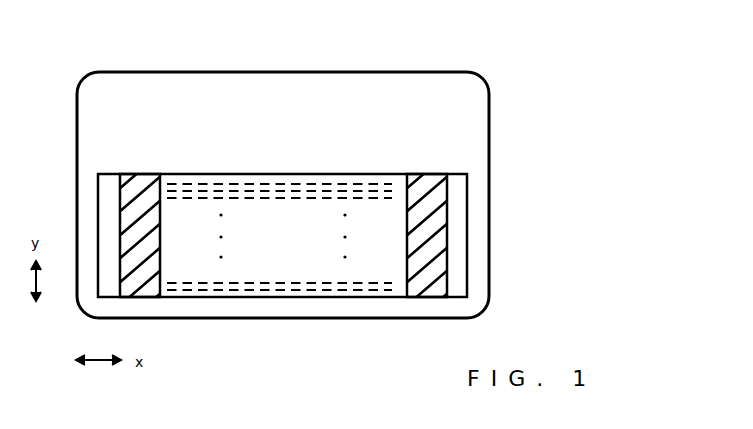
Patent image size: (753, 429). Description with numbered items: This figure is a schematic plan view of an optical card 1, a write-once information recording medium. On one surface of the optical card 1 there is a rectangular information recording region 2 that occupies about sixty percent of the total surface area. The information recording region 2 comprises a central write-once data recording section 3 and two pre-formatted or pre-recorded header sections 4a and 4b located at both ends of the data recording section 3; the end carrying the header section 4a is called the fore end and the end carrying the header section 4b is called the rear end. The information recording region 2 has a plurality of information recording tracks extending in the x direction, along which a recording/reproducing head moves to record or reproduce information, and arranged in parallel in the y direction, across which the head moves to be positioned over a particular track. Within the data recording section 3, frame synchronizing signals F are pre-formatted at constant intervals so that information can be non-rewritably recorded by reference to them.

The optical card 1 is at (407, 72).
The information recording region 2 is at (473, 233).
The data recording section 3 is at (303, 174).
The header section 4a is at (132, 174).
The header section 4b is at (429, 174).
The frame synchronizing signal F is at (231, 290).